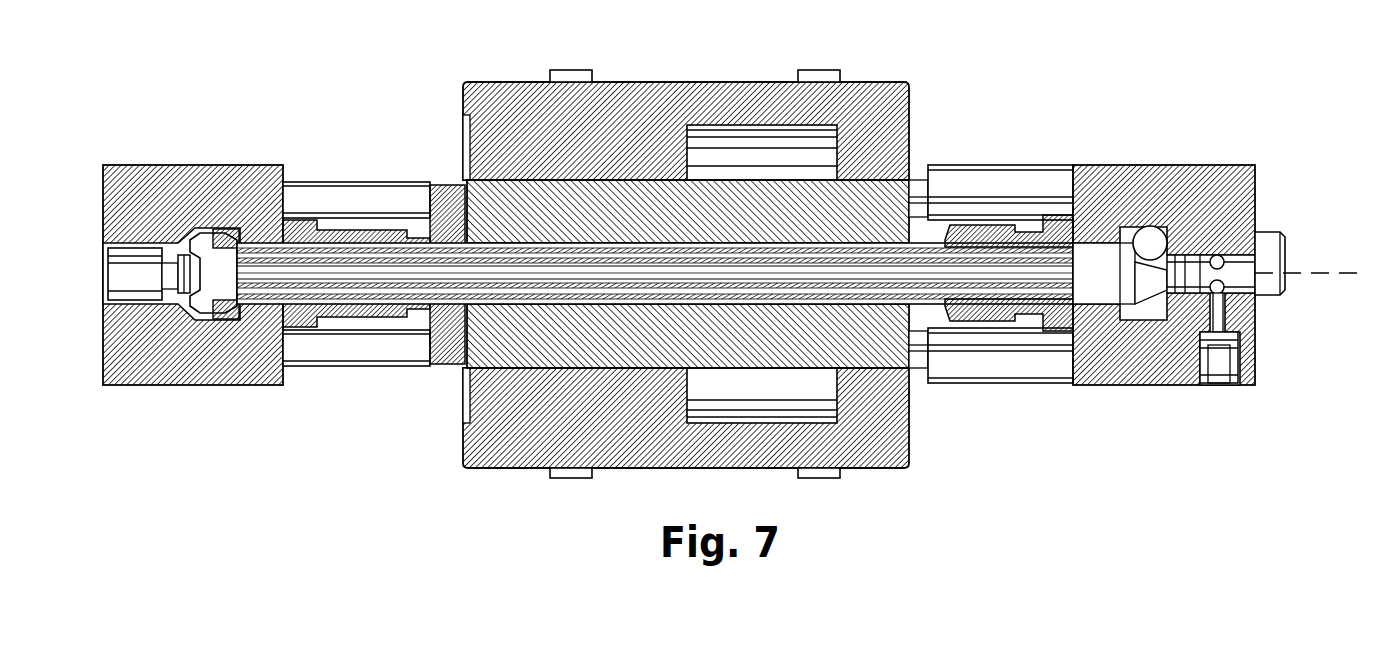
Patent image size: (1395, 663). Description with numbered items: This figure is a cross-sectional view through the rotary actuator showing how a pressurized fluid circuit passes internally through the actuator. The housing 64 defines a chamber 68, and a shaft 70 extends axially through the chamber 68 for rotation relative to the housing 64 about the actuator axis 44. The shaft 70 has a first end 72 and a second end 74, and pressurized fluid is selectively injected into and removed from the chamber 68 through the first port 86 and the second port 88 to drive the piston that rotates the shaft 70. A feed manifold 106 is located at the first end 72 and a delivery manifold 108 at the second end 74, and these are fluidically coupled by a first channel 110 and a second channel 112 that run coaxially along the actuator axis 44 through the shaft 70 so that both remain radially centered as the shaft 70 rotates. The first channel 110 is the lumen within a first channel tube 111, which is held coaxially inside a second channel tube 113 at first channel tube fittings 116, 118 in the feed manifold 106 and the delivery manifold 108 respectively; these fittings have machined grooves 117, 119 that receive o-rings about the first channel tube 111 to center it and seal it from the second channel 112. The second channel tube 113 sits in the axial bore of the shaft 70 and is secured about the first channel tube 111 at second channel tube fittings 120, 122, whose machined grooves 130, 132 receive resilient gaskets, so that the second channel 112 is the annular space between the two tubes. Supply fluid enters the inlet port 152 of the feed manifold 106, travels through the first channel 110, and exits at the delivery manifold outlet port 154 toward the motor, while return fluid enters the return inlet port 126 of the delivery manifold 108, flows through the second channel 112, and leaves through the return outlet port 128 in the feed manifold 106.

The actuator axis 44 is at (1338, 272).
The housing 64 is at (505, 100).
The chamber 68 is at (630, 426).
The shaft 70 is at (637, 185).
The first end 72 is at (508, 372).
The second end 74 is at (880, 372).
The first port 86 is at (820, 76).
The second port 88 is at (567, 76).
The feed manifold 106 is at (170, 137).
The delivery manifold 108 is at (1150, 137).
The first channel 110 is at (783, 276).
The first channel tube 111 is at (330, 262).
The second channel 112 is at (376, 292).
The second channel tube 113 is at (936, 240).
The first channel tube fitting 116 is at (192, 308).
The machined groove 117 is at (183, 294).
The first channel tube fitting 118 is at (1167, 304).
The machined groove 119 is at (1208, 256).
The second channel tube fitting 120 is at (299, 336).
The second channel tube fitting 122 is at (1034, 326).
The return inlet port 126 is at (1158, 233).
The return outlet port 128 is at (219, 230).
The machined groove 130 is at (277, 231).
The machined groove 132 is at (1083, 228).
The inlet port 152 is at (100, 256).
The delivery manifold outlet port 154 is at (1256, 262).